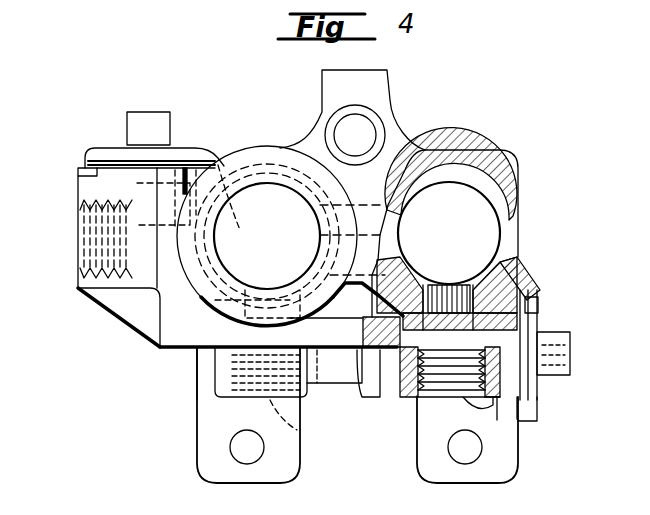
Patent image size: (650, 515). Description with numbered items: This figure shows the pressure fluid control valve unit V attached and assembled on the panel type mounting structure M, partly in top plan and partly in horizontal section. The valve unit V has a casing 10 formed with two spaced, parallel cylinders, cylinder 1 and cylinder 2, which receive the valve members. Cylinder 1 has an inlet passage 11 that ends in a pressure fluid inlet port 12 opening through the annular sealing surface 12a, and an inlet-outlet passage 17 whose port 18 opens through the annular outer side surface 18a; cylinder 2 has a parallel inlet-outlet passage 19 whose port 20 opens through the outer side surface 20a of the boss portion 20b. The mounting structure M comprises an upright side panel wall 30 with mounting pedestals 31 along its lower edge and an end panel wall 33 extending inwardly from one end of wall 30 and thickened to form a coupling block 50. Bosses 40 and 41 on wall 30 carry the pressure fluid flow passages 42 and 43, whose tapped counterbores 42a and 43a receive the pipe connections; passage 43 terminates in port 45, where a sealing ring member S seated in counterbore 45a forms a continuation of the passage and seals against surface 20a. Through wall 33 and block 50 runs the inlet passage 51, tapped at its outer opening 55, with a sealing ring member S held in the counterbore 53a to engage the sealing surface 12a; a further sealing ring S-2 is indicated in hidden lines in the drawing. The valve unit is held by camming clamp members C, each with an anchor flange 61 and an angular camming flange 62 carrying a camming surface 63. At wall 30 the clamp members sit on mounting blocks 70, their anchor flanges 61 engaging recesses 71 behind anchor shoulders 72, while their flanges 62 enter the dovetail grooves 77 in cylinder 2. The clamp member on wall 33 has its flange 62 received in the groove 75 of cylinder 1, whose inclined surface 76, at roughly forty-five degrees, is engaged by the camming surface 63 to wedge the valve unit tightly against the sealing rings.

The casing 10 is at (285, 150).
The inlet passage 11 is at (225, 241).
The cylinder 1 is at (251, 186).
The inlet-outlet passage 17 is at (259, 303).
The annular outer side surface 18a is at (300, 274).
The anchor flange 61 is at (88, 156).
The camming clamp member C is at (112, 150).
The inlet passage 51 is at (78, 290).
The opening 55 is at (85, 242).
The coupling block 50 is at (90, 302).
The pressure fluid inlet port 12 is at (150, 310).
The annular sealing surface 12a is at (173, 188).
The counterbore 53a is at (170, 200).
The end panel wall 33 is at (158, 348).
The mounting structure M is at (177, 353).
The port 18 is at (210, 362).
The inclined surface 76 is at (200, 170).
The groove 75 is at (228, 160).
The camming and clamping flange 62 is at (212, 150).
The groove 77 is at (518, 262).
The camming surface 63 is at (545, 278).
The port 45 is at (498, 315).
The sealing ring member S is at (538, 300).
The counterbore 45a is at (540, 305).
The cylinder 2 is at (520, 200).
The pressure fluid control valve unit V is at (455, 135).
The annular outer side surface 20a is at (412, 283).
The inlet-outlet passage 19 is at (440, 292).
The port 20 is at (450, 290).
The boss portion 20b is at (368, 306).
The side panel wall 30 is at (375, 398).
The boss 41 is at (385, 410).
The pressure fluid flow passage 43 is at (432, 400).
The tapped counterbore 43a is at (410, 398).
The mounting block 70 is at (497, 422).
The recess 71 is at (522, 425).
The anchor shoulder 72 is at (538, 400).
The mounting pedestal 31 is at (273, 478).
The boss 40 is at (262, 390).
The pressure fluid flow passage 42 is at (308, 398).
The tapped counterbore 42a is at (300, 432).
The spring S-2 is at (235, 318).